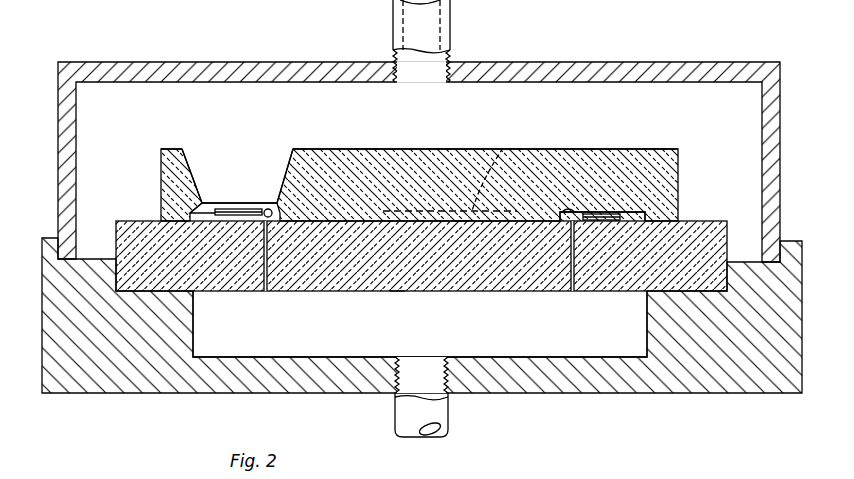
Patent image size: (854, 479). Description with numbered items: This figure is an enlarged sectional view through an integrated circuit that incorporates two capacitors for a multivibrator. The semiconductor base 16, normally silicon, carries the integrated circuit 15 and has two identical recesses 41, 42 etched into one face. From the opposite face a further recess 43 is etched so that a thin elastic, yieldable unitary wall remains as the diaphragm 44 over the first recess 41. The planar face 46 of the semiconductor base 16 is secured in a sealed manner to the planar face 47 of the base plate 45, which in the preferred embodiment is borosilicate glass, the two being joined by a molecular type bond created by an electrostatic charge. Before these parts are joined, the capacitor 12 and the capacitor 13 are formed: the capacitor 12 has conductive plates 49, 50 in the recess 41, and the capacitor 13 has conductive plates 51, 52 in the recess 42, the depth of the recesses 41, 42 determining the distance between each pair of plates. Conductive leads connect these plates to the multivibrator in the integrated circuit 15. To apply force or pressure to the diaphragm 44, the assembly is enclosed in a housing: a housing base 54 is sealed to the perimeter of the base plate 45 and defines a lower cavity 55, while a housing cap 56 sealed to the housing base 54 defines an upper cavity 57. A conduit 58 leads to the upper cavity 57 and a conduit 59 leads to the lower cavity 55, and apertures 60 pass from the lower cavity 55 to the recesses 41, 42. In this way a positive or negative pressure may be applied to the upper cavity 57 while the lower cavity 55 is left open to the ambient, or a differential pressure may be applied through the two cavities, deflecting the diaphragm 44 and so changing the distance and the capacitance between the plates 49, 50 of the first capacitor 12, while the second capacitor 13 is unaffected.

The capacitor 12 is at (253, 224).
The capacitor 13 is at (590, 222).
The integrated circuit 15 is at (503, 148).
The semiconductor base 16 is at (680, 178).
The recess 41 is at (280, 217).
The recess 42 is at (577, 212).
The recess 43 is at (286, 177).
The diaphragm 44 is at (205, 203).
The base plate 45 is at (397, 292).
The planar face 46 is at (462, 222).
The planar face 47 is at (340, 221).
The conductive plate 49 is at (207, 218).
The conductive plate 50 is at (227, 218).
The conductive plate 51 is at (620, 213).
The conductive plate 52 is at (608, 222).
The housing base 54 is at (772, 383).
The lower cavity 55 is at (590, 344).
The housing cap 56 is at (780, 64).
The upper cavity 57 is at (714, 122).
The conduit 58 is at (455, 33).
The conduit 59 is at (450, 413).
The aperture 60 is at (266, 292).